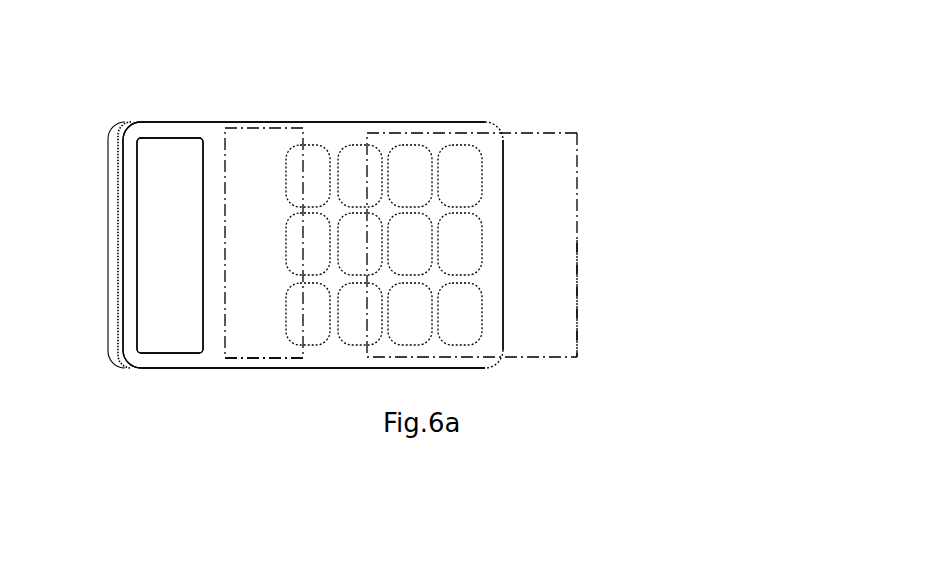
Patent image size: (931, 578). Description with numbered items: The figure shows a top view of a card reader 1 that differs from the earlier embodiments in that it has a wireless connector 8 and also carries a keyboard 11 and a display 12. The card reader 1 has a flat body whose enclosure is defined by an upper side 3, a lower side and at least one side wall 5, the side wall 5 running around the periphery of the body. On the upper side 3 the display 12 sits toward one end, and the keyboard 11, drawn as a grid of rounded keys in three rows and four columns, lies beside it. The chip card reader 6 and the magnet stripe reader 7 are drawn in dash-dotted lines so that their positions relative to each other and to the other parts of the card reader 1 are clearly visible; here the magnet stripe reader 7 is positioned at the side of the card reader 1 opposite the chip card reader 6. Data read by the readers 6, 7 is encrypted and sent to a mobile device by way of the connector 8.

The card reader 1 is at (148, 77).
The upper side 3 is at (578, 136).
The side wall 5 is at (380, 105).
The chip card reader 6 is at (589, 305).
The magnet stripe reader 7 is at (290, 374).
The connector 8 is at (602, 240).
The keyboard 11 is at (494, 166).
The display 12 is at (258, 157).